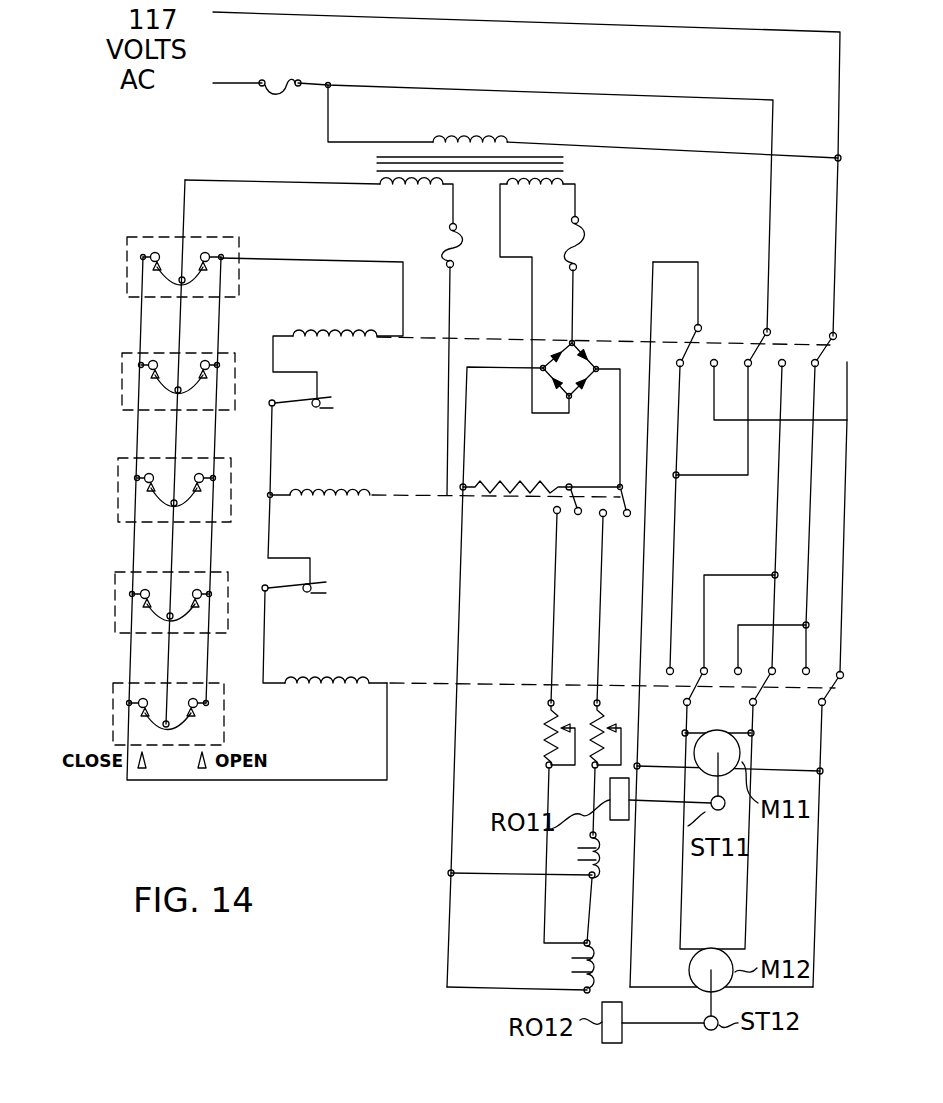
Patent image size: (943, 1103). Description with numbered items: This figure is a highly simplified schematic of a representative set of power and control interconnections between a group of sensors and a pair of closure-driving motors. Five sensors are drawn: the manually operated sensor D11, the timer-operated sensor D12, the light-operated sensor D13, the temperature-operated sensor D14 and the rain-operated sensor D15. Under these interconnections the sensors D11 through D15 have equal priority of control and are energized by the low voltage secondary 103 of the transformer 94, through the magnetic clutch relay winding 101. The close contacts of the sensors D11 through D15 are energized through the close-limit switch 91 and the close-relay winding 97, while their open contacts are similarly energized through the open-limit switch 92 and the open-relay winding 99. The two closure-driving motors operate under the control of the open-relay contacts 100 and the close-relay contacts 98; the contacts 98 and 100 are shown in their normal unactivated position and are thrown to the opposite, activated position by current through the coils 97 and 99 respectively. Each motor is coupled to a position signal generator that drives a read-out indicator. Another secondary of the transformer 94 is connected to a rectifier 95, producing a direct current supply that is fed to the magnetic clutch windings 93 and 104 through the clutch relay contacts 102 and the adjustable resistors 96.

The close-limit switch 91 is at (328, 588).
The open-limit switch 92 is at (333, 401).
The magnetic clutch winding 93 is at (622, 855).
The transformer 94 is at (470, 136).
The rectifier 95 is at (598, 362).
The adjustable resistors 96 is at (586, 786).
The close-relay winding 97 is at (331, 673).
The close-relay contacts 98 is at (696, 706).
The open-relay winding 99 is at (335, 330).
The open-relay contacts 100 is at (702, 324).
The magnetic clutch relay winding 101 is at (328, 490).
The clutch relay contacts 102 is at (600, 486).
The low voltage secondary 103 is at (406, 203).
The magnetic clutch winding 104 is at (606, 968).
The manually operated sensor D11 is at (125, 252).
The timer-operated sensor D12 is at (121, 370).
The light-operated sensor D13 is at (118, 474).
The temperature-operated sensor D14 is at (115, 588).
The rain-operated sensor D15 is at (113, 698).